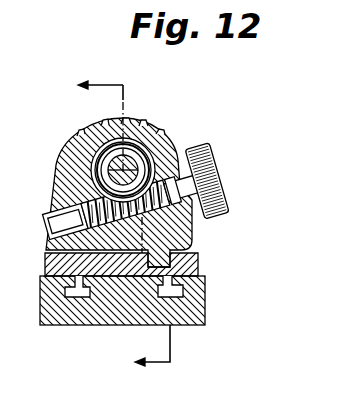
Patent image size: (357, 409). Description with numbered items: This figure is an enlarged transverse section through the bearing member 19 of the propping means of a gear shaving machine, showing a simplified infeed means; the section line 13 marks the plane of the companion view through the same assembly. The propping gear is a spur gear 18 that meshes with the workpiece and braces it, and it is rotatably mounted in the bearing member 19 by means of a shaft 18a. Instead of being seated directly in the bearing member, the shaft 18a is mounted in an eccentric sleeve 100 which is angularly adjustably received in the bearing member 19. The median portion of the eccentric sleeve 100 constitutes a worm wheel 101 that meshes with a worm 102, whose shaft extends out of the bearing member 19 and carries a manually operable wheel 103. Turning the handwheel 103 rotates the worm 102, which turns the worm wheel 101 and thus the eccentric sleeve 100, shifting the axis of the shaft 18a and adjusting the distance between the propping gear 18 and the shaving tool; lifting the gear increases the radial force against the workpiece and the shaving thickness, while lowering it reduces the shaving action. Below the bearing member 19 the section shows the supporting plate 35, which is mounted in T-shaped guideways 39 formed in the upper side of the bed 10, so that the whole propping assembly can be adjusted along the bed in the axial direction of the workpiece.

The bed 10 is at (42, 319).
The section line 13— 13 is at (111, 225).
The spur gear 18 is at (143, 127).
The shaft 18a is at (108, 176).
The bearing member 19 is at (92, 162).
The supporting plate 35 is at (46, 257).
The T-shaped guideways 39 is at (64, 290).
The eccentric sleeve 100 is at (133, 127).
The worm wheel 101 is at (92, 128).
The worm 102 is at (178, 224).
The manually operable wheel 103 is at (208, 148).